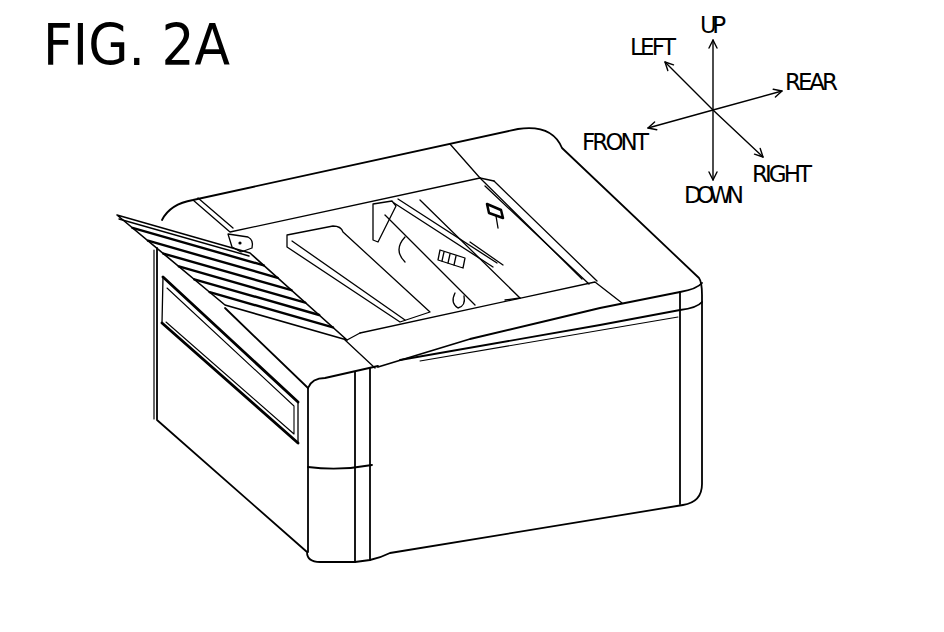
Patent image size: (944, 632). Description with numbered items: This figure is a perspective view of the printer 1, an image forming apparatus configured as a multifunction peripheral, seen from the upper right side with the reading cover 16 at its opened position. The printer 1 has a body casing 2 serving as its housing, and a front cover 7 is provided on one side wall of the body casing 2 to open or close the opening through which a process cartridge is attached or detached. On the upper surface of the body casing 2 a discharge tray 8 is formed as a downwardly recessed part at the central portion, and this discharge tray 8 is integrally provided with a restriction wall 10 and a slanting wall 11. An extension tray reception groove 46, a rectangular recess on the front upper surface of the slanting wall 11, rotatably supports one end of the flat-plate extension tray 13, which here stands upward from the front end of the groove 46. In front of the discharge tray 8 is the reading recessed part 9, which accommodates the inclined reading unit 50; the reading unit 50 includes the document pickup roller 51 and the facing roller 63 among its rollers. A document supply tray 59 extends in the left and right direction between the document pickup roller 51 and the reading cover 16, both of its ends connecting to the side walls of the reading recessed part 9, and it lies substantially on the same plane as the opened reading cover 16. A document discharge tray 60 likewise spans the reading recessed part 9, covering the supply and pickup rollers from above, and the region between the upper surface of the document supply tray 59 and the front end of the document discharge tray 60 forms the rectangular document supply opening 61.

The printer 1 is at (410, 338).
The body casing 2 is at (705, 398).
The front cover 7 is at (345, 440).
The discharge tray 8 is at (440, 195).
The reading recessed part 9 is at (345, 218).
The restriction wall 10 is at (548, 265).
The slanting wall 11 is at (512, 302).
The extension tray 13 is at (408, 231).
The reading cover 16 is at (118, 218).
The extension tray reception groove 46 is at (493, 268).
The reading unit 50 is at (395, 325).
The document pickup roller 51 is at (342, 298).
The document supply tray 59 is at (350, 326).
The document discharge tray 60 is at (300, 235).
The document supply opening 61 is at (236, 232).
The facing roller 63 is at (388, 240).